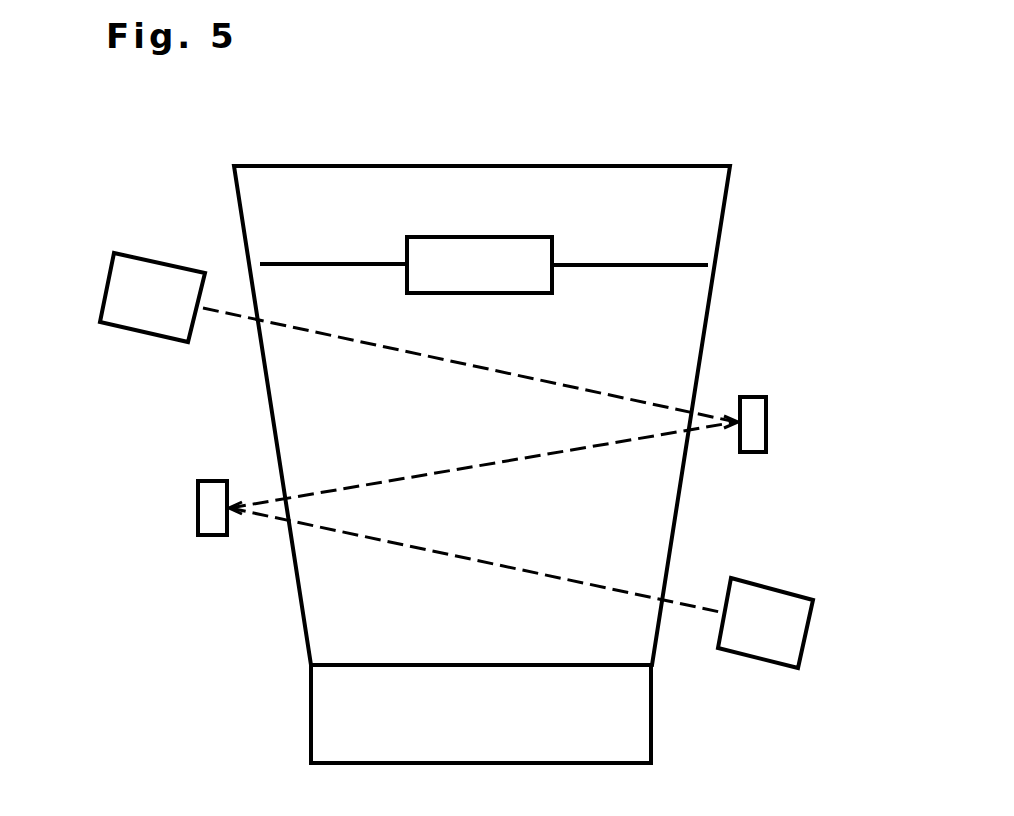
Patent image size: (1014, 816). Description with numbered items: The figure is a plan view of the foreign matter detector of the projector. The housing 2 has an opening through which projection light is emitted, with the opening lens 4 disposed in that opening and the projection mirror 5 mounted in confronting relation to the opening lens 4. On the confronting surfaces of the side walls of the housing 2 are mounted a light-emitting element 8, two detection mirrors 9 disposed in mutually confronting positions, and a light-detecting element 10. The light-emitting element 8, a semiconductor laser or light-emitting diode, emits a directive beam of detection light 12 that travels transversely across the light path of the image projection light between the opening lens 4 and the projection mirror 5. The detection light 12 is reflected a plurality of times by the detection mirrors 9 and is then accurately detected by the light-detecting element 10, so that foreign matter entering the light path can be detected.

The housing 2 is at (724, 230).
The opening lens 4 is at (490, 237).
The projection mirror 5 is at (652, 735).
The light-emitting element 8 is at (106, 292).
The detection mirrors 9 is at (766, 412).
The light-detecting element 10 is at (812, 630).
The detection light 12 is at (356, 342).